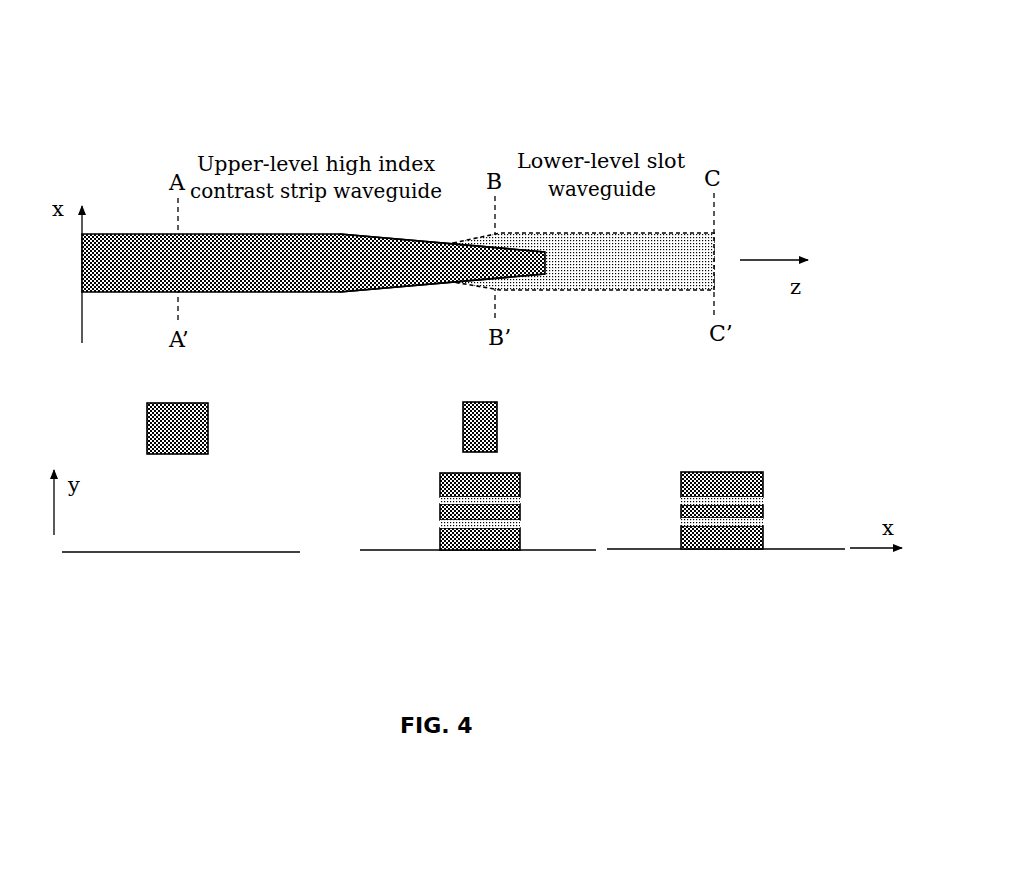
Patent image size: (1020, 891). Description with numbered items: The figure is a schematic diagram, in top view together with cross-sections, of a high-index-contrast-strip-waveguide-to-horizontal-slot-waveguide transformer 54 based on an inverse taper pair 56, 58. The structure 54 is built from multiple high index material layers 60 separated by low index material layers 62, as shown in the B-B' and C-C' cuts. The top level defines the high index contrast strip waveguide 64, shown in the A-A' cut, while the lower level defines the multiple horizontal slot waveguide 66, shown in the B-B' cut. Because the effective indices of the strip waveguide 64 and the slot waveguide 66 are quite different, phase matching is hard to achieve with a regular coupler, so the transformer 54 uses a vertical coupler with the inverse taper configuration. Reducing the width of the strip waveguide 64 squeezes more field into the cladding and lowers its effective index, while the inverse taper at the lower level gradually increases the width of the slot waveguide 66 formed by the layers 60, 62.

The high-index-contrast-strip-waveguide-to-horizontal-slot-waveguide transformer 54 is at (378, 231).
The inverse taper 56 is at (440, 230).
The inverse taper 58 is at (450, 285).
The high index material layer 60 is at (494, 413).
The low index material layer 62 is at (440, 525).
The high index contrast strip waveguide 64 is at (246, 262).
The multiple horizontal slot waveguide 66 is at (636, 262).